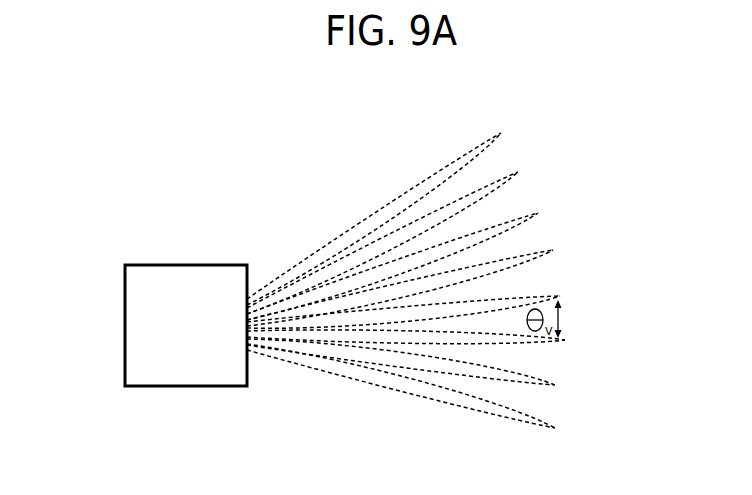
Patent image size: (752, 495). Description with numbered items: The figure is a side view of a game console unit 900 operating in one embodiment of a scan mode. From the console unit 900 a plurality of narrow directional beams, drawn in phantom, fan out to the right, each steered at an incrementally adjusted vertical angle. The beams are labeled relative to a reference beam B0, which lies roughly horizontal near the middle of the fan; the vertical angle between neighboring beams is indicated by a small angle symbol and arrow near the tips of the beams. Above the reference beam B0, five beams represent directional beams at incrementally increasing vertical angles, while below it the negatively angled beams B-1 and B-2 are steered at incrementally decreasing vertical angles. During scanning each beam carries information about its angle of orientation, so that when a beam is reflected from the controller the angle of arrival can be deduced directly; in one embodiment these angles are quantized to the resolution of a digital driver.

The game console unit 900 is at (125, 326).
The reference beam B0 is at (422, 343).
The negatively angled beam B-1 is at (427, 370).
The negatively angled beam B-2 is at (424, 393).